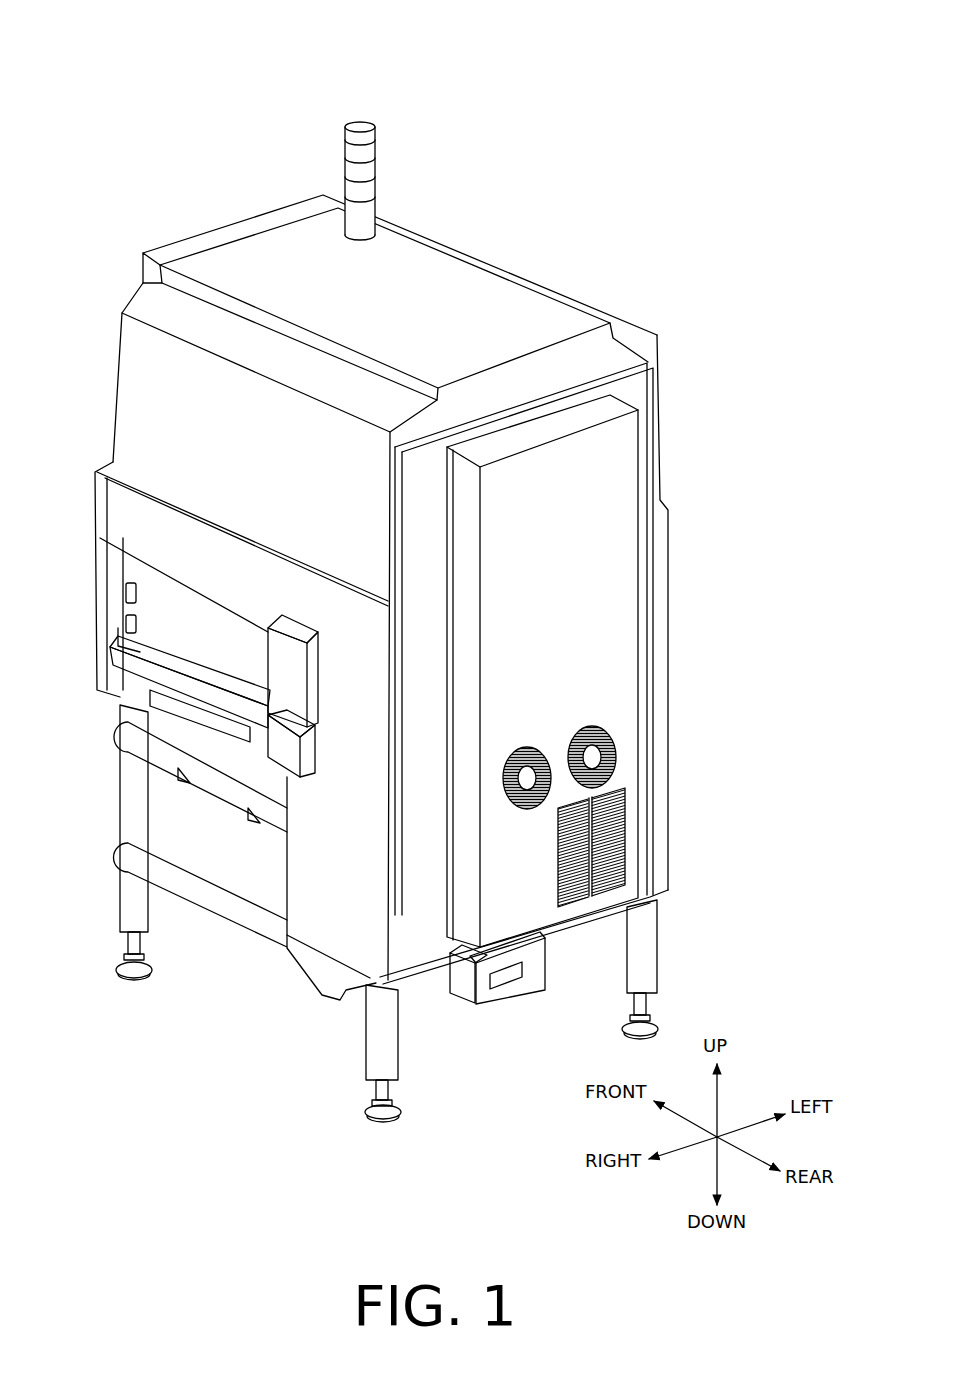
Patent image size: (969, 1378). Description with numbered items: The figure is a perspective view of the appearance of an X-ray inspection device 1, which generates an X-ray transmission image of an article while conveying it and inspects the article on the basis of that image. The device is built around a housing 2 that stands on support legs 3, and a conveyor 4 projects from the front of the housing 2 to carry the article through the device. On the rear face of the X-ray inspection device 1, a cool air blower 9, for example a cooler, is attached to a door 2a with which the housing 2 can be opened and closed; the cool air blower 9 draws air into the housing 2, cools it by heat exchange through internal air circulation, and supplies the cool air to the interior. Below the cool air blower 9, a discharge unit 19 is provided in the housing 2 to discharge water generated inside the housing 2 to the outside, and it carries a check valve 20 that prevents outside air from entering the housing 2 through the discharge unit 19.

The X-ray inspection device 1 is at (561, 137).
The housing 2 is at (147, 372).
The door 2a is at (634, 386).
The cool air blower 9 is at (606, 452).
The conveyor 4 is at (147, 650).
The support legs 3 is at (128, 897).
The discharge unit 19 is at (462, 992).
The check valve 20 is at (506, 996).